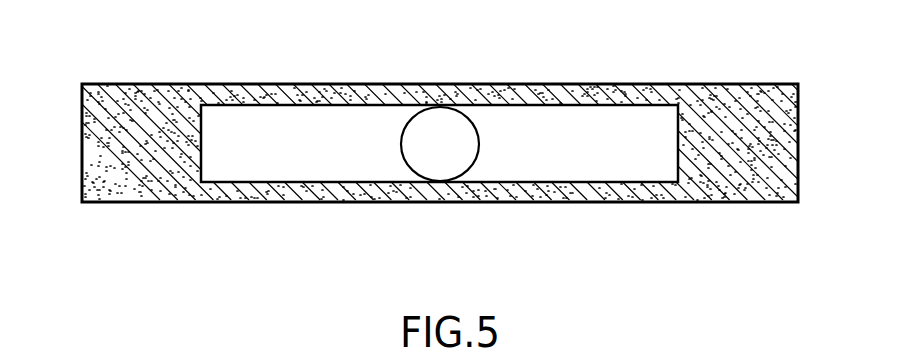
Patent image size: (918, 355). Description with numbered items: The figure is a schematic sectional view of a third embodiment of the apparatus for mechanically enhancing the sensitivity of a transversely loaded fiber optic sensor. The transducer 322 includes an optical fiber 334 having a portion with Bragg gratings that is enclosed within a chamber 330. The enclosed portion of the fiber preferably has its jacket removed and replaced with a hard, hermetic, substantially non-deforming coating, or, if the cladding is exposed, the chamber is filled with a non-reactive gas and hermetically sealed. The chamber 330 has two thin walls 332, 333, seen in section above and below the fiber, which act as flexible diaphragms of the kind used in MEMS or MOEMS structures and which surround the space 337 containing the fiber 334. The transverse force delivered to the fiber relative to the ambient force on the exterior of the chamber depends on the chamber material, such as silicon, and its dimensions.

The transducer 322 is at (120, 275).
The chamber 330 is at (797, 188).
The thin wall 332 is at (323, 102).
The thin wall 333 is at (373, 200).
The optical fiber 334 is at (447, 135).
The space 337 is at (582, 133).